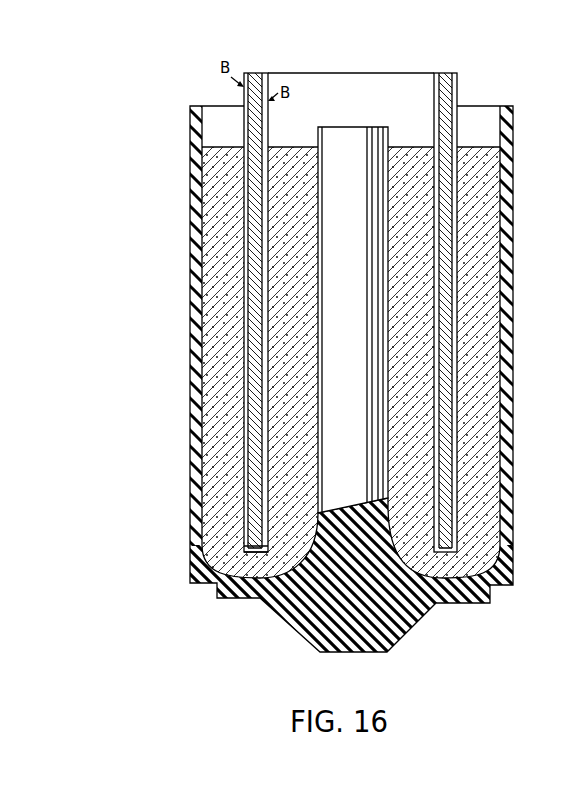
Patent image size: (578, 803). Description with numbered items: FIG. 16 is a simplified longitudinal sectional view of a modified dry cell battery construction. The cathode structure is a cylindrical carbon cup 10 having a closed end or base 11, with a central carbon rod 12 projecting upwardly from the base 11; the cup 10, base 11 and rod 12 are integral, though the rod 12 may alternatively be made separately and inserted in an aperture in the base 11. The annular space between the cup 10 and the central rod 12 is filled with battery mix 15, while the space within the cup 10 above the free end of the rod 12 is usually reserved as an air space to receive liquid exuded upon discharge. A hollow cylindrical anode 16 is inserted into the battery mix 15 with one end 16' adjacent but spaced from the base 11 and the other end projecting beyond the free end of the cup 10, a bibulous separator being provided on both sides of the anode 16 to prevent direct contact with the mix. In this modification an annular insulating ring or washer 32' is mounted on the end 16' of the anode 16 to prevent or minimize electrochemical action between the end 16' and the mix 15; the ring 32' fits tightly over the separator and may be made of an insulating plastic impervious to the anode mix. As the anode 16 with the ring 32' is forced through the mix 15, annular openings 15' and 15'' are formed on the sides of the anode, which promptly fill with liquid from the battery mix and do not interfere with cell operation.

The carbon cup 10 is at (513, 552).
The base 11 is at (415, 622).
The carbon rod 12 is at (343, 127).
The battery mix 15 is at (444, 349).
The annular opening 15' is at (231, 349).
The annular opening 15'' is at (289, 349).
The anode 16 is at (447, 294).
The end of anode 16' is at (249, 356).
The insulating ring 32' is at (208, 548).